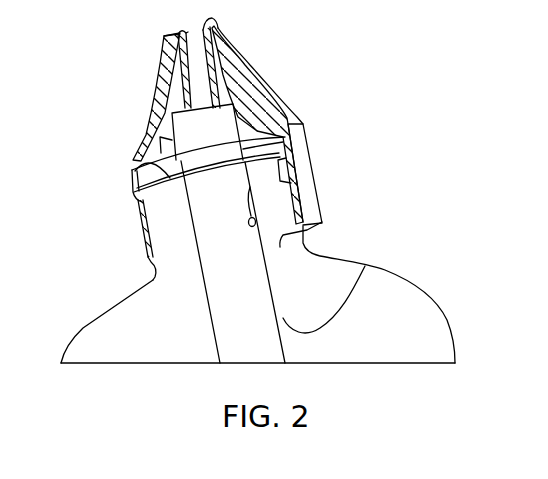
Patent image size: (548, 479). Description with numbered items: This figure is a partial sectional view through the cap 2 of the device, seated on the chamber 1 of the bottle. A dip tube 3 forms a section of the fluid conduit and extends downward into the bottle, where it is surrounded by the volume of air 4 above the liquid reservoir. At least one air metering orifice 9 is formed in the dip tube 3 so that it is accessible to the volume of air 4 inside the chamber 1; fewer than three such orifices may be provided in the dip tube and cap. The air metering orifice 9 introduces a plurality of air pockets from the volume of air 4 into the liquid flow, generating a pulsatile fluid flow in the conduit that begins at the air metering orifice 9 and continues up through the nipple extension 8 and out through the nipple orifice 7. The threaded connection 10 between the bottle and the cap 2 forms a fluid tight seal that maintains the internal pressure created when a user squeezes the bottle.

The chamber 1 is at (82, 328).
The cap 2 is at (155, 122).
The dip tube 3 is at (347, 278).
The volume of air 4 is at (323, 230).
The nipple orifice 7 is at (196, 29).
The nipple extension 8 is at (222, 88).
The air metering orifice 9 is at (250, 187).
The threaded connection 10 is at (132, 172).